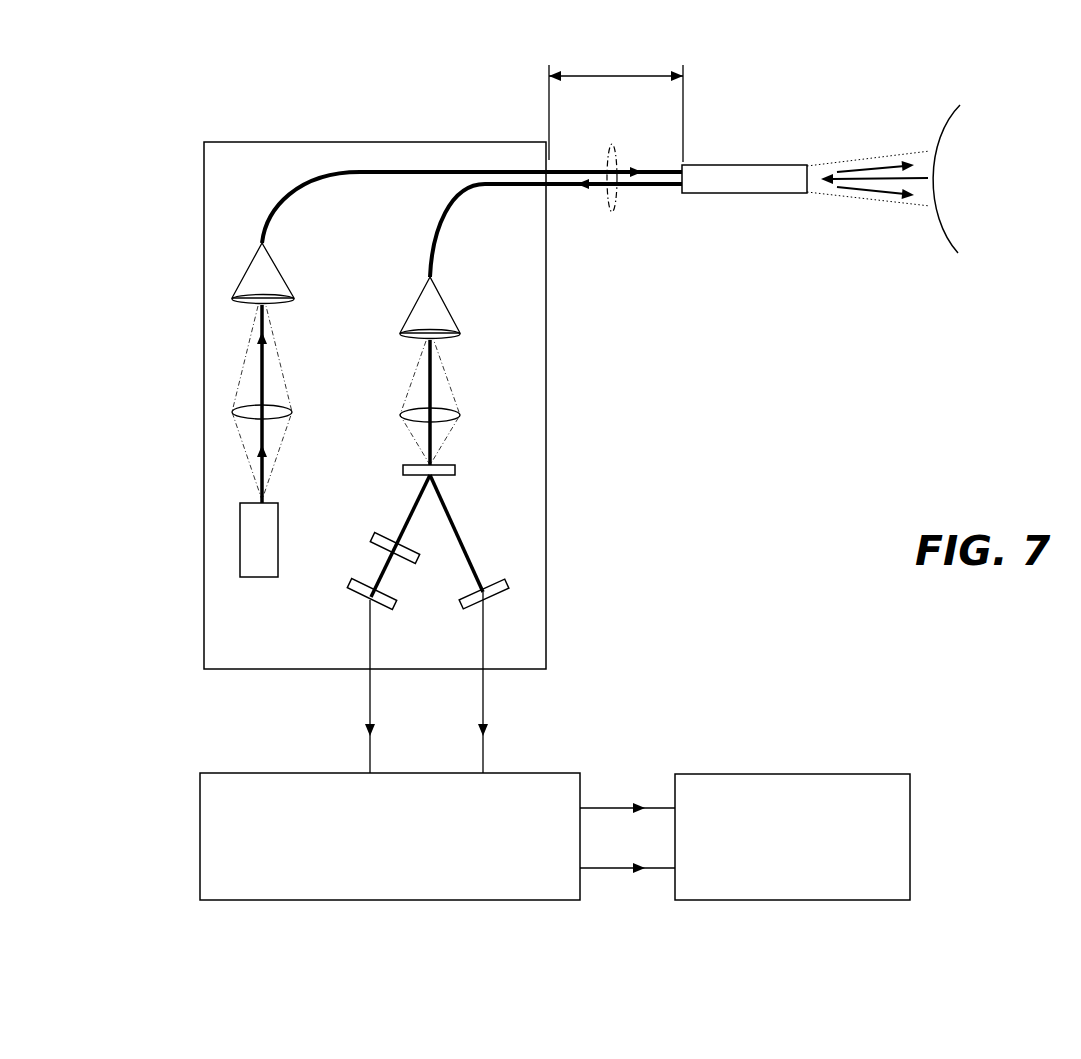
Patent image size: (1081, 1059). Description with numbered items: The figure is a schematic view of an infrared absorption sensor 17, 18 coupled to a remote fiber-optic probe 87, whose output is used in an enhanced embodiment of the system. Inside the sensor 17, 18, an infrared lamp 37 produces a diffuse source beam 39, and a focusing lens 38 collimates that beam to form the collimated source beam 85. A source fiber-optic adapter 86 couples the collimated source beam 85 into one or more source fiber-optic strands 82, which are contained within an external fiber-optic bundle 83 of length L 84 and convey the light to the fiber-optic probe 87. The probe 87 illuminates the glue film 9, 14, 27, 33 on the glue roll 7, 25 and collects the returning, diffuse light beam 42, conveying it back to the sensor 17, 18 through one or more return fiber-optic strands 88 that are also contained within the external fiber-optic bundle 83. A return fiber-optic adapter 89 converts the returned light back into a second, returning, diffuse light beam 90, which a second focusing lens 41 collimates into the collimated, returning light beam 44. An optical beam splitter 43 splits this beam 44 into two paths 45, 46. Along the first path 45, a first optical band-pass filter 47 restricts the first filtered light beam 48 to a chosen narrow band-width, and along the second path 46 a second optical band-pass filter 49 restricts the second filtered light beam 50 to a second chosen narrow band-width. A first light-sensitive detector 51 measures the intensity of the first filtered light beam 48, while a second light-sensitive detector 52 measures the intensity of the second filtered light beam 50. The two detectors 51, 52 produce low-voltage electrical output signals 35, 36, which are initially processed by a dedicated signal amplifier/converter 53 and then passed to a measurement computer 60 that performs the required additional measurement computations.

The glue roll 7 is at (980, 200).
The glue roll 25 is at (980, 200).
The glue film 9 is at (980, 200).
The glue film 14 is at (980, 200).
The glue film 27 is at (980, 200).
The glue film 33 is at (957, 130).
The sensor 17 is at (295, 414).
The sensor 18 is at (203, 642).
The low-voltage electrical output signal 35 is at (370, 748).
The low-voltage electrical output signal 36 is at (483, 710).
The infrared lamp 37 is at (240, 543).
The focusing lens 38 is at (233, 411).
The diffuse source beam 39 is at (257, 467).
The second focusing lens 41 is at (460, 413).
The returning diffuse light beam 42 is at (823, 183).
The optical beam splitter 43 is at (446, 520).
The collimated returning light beam 44 is at (456, 470).
The first path 45 is at (410, 526).
The second path 46 is at (478, 568).
The first optical band-pass filter 47 is at (372, 541).
The first filtered light beam 48 is at (353, 578).
The second optical band-pass filter 49 is at (437, 567).
The second filtered light beam 50 is at (505, 600).
The first light-sensitive detector 51 is at (357, 587).
The second light-sensitive detector 52 is at (508, 592).
The dedicated signal amplifier/converter 53 is at (437, 836).
The measurement computer 60 is at (792, 837).
The source fiber-optic strand 82 is at (325, 172).
The external fiber-optic bundle 83 is at (612, 212).
The length L 84 is at (602, 77).
The collimated source beam 85 is at (257, 367).
The source fiber-optic adapter 86 is at (243, 276).
The fiber-optic probe 87 is at (745, 193).
The return fiber-optic strand 88 is at (565, 186).
The return fiber-optic adapter 89 is at (457, 317).
The second returning diffuse light beam 90 is at (433, 373).